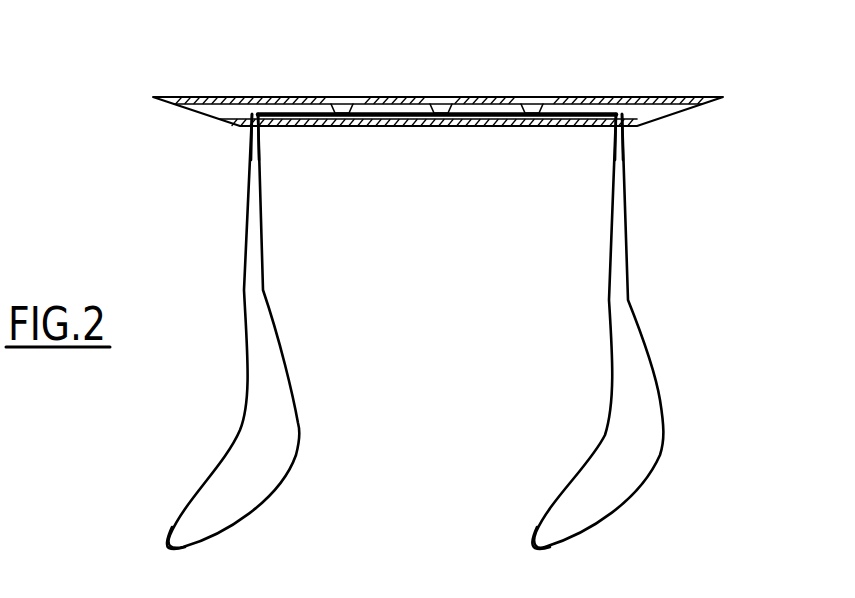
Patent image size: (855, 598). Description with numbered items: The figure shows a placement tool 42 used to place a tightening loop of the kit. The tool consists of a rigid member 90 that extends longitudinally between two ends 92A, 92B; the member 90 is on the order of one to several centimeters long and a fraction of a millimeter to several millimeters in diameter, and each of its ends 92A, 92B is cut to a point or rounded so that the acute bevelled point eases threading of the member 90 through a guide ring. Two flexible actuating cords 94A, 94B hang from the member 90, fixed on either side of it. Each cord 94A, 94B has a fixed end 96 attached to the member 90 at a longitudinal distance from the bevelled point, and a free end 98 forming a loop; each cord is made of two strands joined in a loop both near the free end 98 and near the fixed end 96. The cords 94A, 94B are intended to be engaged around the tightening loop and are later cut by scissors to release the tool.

The placement tool 42 is at (733, 86).
The rigid member 90 is at (536, 92).
The first end of the rigid member 92A is at (183, 96).
The second end of the rigid member 92B is at (687, 96).
The first flexible actuating cord 94A is at (286, 363).
The second flexible actuating cord 94B is at (612, 368).
The fixed end of the cord 96 is at (250, 128).
The free end of the cord 98 is at (168, 546).